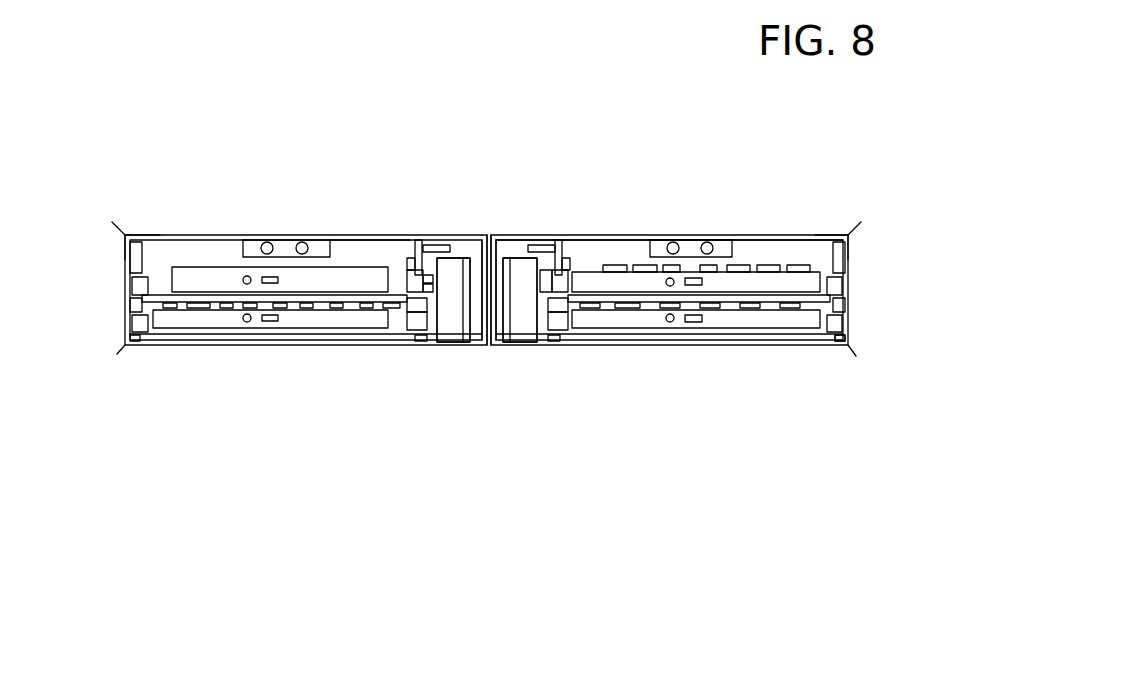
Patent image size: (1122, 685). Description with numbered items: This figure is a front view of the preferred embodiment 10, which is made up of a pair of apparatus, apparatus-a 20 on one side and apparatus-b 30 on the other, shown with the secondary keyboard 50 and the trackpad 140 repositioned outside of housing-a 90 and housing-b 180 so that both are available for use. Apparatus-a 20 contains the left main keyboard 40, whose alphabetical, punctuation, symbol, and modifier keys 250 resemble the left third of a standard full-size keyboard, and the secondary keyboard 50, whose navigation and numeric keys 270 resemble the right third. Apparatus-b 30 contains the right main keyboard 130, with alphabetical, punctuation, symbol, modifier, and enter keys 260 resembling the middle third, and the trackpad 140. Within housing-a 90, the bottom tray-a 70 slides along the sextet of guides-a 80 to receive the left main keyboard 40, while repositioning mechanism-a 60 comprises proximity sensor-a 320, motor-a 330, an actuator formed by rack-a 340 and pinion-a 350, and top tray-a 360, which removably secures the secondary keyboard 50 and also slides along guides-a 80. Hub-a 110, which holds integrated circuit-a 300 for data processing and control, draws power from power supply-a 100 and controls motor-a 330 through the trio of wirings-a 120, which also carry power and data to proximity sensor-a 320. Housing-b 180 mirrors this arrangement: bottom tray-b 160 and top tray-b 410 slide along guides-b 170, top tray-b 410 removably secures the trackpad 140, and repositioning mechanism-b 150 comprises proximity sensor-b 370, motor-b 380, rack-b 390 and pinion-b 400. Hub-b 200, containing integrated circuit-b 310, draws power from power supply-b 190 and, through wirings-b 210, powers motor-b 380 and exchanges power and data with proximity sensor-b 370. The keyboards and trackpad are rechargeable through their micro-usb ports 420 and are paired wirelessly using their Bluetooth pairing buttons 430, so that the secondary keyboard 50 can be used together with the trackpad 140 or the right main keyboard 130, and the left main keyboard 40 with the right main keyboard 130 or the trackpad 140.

The preferred embodiment 10 is at (493, 138).
The apparatus-a 20 is at (705, 503).
The apparatus-b 30 is at (273, 502).
The left main keyboard 40 is at (792, 318).
The secondary keyboard 50 is at (817, 253).
The repositioning mechanism-a 60 is at (535, 448).
The bottom tray-a 70 is at (840, 325).
The guides-a 80 is at (567, 252).
The housing-a 90 is at (850, 235).
The power supply-a 100 is at (497, 338).
The hub-a 110 is at (560, 246).
The wirings-a 120 is at (548, 250).
The right main keyboard 130 is at (185, 318).
The trackpad 140 is at (200, 278).
The repositioning mechanism-b 150 is at (442, 448).
The bottom tray-b 160 is at (140, 325).
The guides-b 170 is at (136, 255).
The housing-b 180 is at (124, 235).
The power supply-b 190 is at (479, 338).
The hub-b 200 is at (426, 250).
The wirings-b 210 is at (350, 242).
The alphabetical, punctuation, symbol, and modifier keys 250 is at (758, 308).
The alphabetical, punctuation, symbol, modifier, and enter keys 260 is at (225, 305).
The navigation and numeric keys 270 is at (770, 277).
The integrated circuit-a 300 is at (533, 248).
The integrated circuit-b 310 is at (450, 252).
The proximity sensor-a 320 is at (723, 246).
The motor-a 330 is at (518, 327).
The rack-a 340 is at (548, 285).
The pinion-a 350 is at (562, 285).
The top tray-a 360 is at (842, 285).
The proximity sensor-b 370 is at (290, 247).
The motor-b 380 is at (455, 325).
The rack-b 390 is at (426, 290).
The pinion-b 400 is at (418, 278).
The top tray-b 410 is at (140, 286).
The micro-usb ports 420 is at (265, 280).
The Bluetooth pairing buttons 430 is at (243, 278).